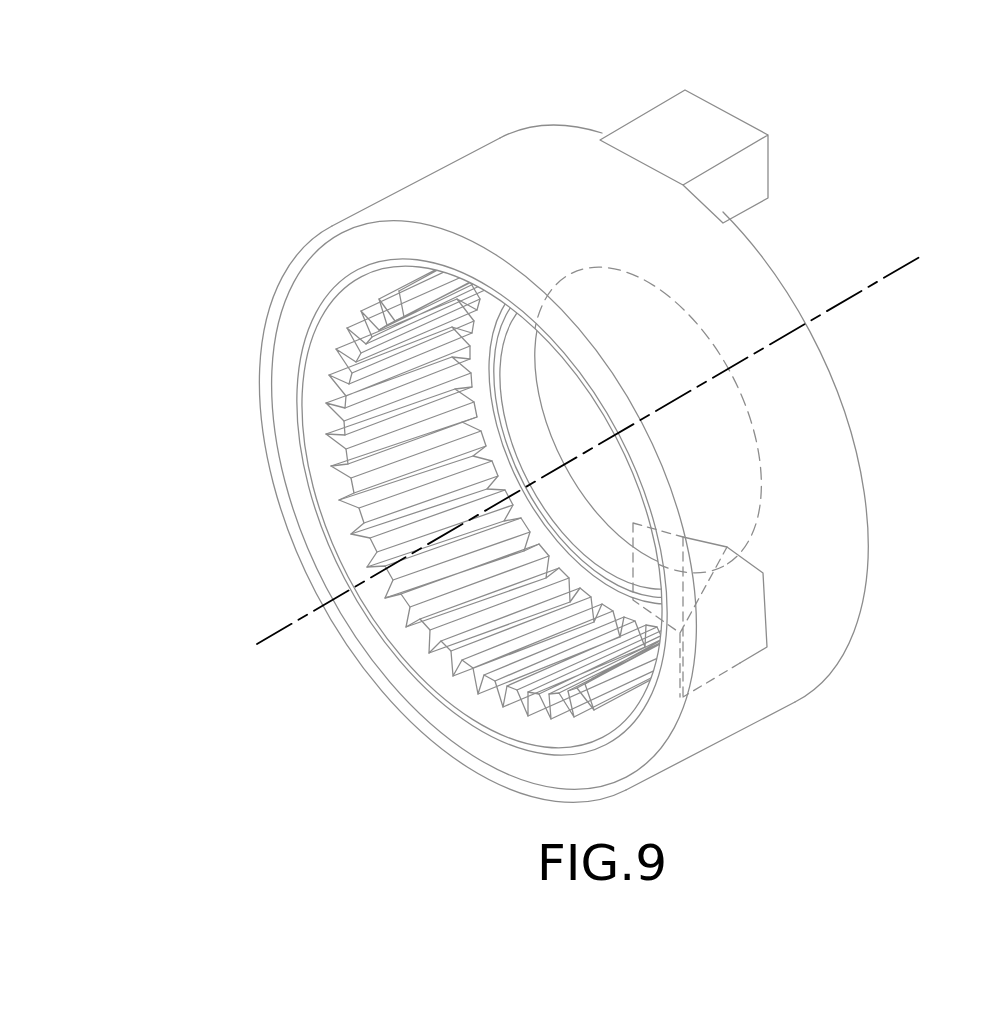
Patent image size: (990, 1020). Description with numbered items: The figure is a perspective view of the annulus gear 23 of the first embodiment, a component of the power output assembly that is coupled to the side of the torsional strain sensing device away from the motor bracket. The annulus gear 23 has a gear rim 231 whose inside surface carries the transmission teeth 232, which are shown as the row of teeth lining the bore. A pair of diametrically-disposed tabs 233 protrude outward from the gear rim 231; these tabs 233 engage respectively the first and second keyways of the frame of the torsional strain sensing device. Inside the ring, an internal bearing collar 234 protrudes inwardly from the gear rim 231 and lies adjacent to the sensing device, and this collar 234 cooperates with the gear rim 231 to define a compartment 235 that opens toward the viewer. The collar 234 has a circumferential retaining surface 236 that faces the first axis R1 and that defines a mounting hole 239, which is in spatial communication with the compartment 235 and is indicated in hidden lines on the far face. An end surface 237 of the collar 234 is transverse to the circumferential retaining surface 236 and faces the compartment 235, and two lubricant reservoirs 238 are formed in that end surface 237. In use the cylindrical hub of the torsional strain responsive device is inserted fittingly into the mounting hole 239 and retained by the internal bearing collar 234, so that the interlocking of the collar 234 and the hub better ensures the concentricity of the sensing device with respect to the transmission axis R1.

The annulus gear 23 is at (413, 180).
The gear rim 231 is at (323, 248).
The transmission teeth 232 is at (328, 440).
The tabs 233 is at (653, 132).
The internal bearing collar 234 is at (550, 441).
The compartment 235 is at (473, 585).
The circumferential retaining surface 236 is at (583, 490).
The end surface 237 is at (507, 442).
The lubricant reservoirs 238 is at (547, 468).
The mounting hole 239 is at (760, 481).
The first axis R1 is at (569, 463).